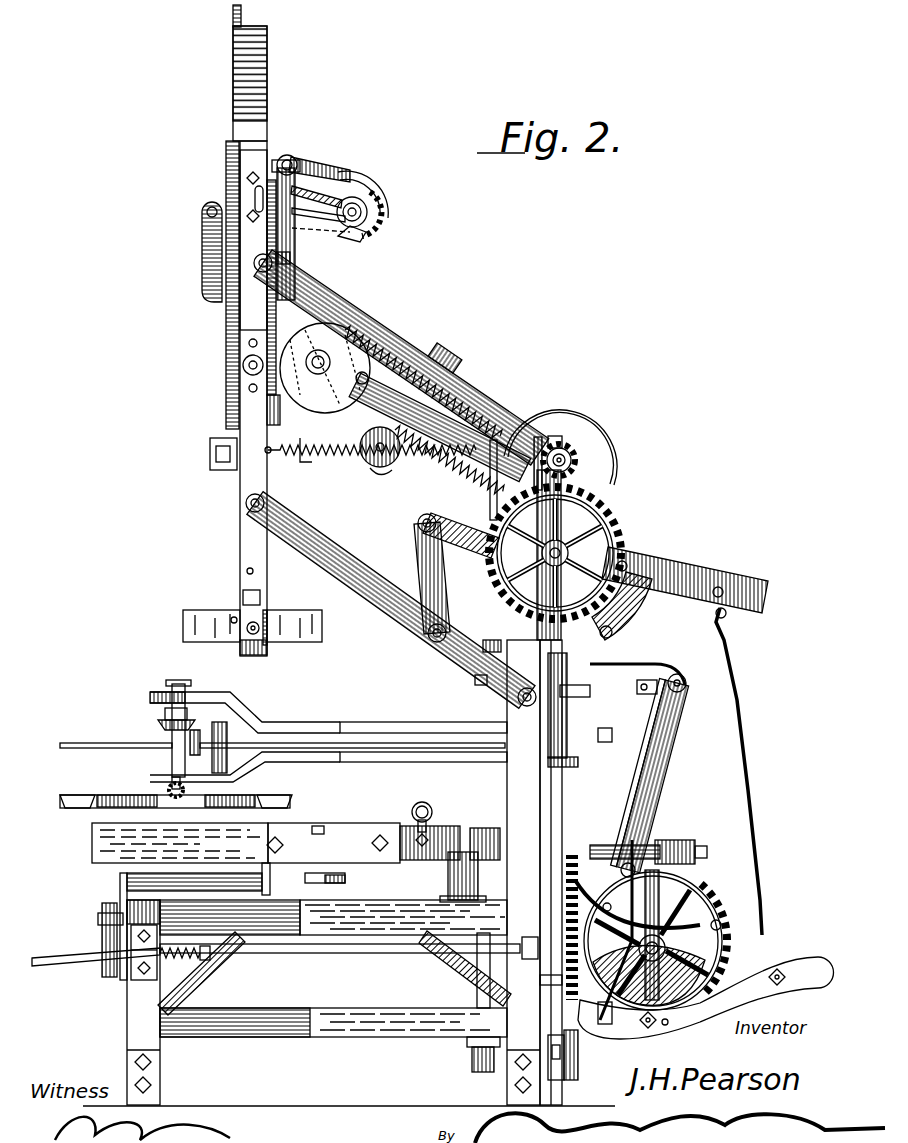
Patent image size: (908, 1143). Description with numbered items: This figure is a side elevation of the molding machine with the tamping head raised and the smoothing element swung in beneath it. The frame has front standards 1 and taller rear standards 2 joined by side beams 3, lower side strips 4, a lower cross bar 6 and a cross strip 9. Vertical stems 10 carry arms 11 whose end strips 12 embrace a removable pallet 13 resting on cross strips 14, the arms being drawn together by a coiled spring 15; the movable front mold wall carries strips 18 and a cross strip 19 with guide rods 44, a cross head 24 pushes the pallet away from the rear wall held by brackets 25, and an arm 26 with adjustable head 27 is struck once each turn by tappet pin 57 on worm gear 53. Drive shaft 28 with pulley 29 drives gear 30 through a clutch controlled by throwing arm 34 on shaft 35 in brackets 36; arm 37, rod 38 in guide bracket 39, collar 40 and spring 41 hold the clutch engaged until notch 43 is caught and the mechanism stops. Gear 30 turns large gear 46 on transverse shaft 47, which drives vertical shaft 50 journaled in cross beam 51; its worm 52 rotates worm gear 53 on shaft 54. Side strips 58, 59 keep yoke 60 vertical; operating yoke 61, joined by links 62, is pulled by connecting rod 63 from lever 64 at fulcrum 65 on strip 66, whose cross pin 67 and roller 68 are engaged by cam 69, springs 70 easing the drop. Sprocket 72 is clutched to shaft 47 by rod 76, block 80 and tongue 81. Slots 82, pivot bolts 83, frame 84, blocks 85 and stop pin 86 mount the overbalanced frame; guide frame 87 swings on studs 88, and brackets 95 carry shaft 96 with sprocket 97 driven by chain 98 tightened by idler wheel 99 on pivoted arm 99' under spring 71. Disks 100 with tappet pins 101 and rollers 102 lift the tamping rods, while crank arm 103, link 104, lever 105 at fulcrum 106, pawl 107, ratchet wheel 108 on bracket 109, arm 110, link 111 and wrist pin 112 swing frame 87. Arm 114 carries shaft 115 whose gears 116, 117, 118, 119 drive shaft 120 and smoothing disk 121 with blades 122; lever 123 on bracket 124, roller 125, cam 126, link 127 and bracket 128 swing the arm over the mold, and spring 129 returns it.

The front standards 1 is at (137, 1032).
The rear standards 2 is at (520, 1020).
The horizontal side beams 3 is at (368, 920).
The lower side strips 4 is at (322, 1020).
The cross bar 6 is at (550, 1058).
The cross strip 9 is at (465, 880).
The vertical stems 10 is at (478, 1068).
The arms 11 is at (440, 830).
The end strips 12 is at (305, 830).
The pallet 13 is at (115, 870).
The cross strips 14 is at (102, 908).
The coiled spring 15 is at (422, 805).
The downwardly extending strips 18 is at (127, 883).
The cross strip 19 is at (120, 938).
The cross head 24 is at (345, 890).
The brackets 25 is at (318, 835).
The arm 26 is at (640, 845).
The adjustable head 27 is at (675, 850).
The drive shaft 28 is at (565, 445).
The pulley 29 is at (598, 470).
The gear 30 is at (560, 440).
The throwing arm 34 is at (543, 400).
The shaft 35 is at (565, 790).
The brackets 36 is at (493, 445).
The arm 37 is at (520, 960).
The rod 38 is at (315, 948).
The guide bracket 39 is at (131, 965).
The collar 40 is at (212, 952).
The spring 41 is at (195, 950).
The notch 43 is at (60, 960).
The parallel rods 44 is at (118, 918).
The large gear 46 is at (603, 545).
The transverse shaft 47 is at (600, 520).
The vertical shaft 50 is at (612, 735).
The cross beam 51 is at (572, 695).
The worm 52 is at (655, 930).
The worm gear 53 is at (700, 880).
The transverse shaft 54 is at (690, 925).
The tappet pin 57 is at (723, 927).
The upper side strips 58 is at (452, 370).
The lower side strips 59 is at (328, 545).
The yoke 60 is at (250, 132).
The operating yoke 61 is at (710, 578).
The links 62 is at (410, 595).
The connecting rod 63 is at (737, 683).
The lever 64 is at (795, 962).
The fulcrum 65 is at (547, 980).
The strip 66 is at (572, 1058).
The cross pin 67 is at (652, 1030).
The anti-friction roller 68 is at (660, 1022).
The cam 69 is at (680, 968).
The coiled springs 70 is at (345, 452).
The spring 71 is at (432, 388).
The sprocket 72 is at (620, 568).
The rod 76 is at (608, 632).
The block 80 is at (640, 690).
The tongue 81 is at (630, 605).
The longitudinal slots 82 is at (235, 612).
The pivot bolts 83 is at (265, 635).
The frame 84 is at (185, 625).
The blocks 85 is at (235, 640).
The stop pin 86 is at (240, 603).
The guide frame 87 is at (225, 333).
The pivot studs 88 is at (250, 367).
The brackets 95 is at (305, 442).
The transverse shaft 96 is at (325, 345).
The sprocket 97 is at (398, 370).
The chain 98 is at (473, 503).
The idler wheel 99 is at (385, 506).
The pivoted arm 99' is at (433, 386).
The disks 100 is at (255, 415).
The tappet pins 101 is at (355, 360).
The wear sleeves 102 is at (362, 378).
The crank arm 103 is at (325, 462).
The link 104 is at (265, 375).
The lever 105 is at (250, 305).
The fulcrum 106 is at (282, 258).
The pawl 107 is at (310, 168).
The ratchet wheel 108 is at (375, 195).
The bracket 109 is at (320, 193).
The arm 110 is at (205, 238).
The link 111 is at (230, 212).
The wrist pin 112 is at (355, 228).
The arm 114 is at (345, 715).
The longitudinal shaft 115 is at (300, 730).
The gear 116 is at (567, 722).
The gear 117 is at (578, 758).
The gear 118 is at (185, 742).
The gear 119 is at (160, 720).
The short vertical shaft 120 is at (172, 757).
The disk 121 is at (255, 796).
The smoothing blades 122 is at (168, 792).
The lever 123 is at (675, 745).
The bracket 124 is at (640, 800).
The anti-friction roller 125 is at (605, 1005).
The cam 126 is at (607, 907).
The link 127 is at (638, 665).
The bracket 128 is at (480, 680).
The spring 129 is at (490, 640).